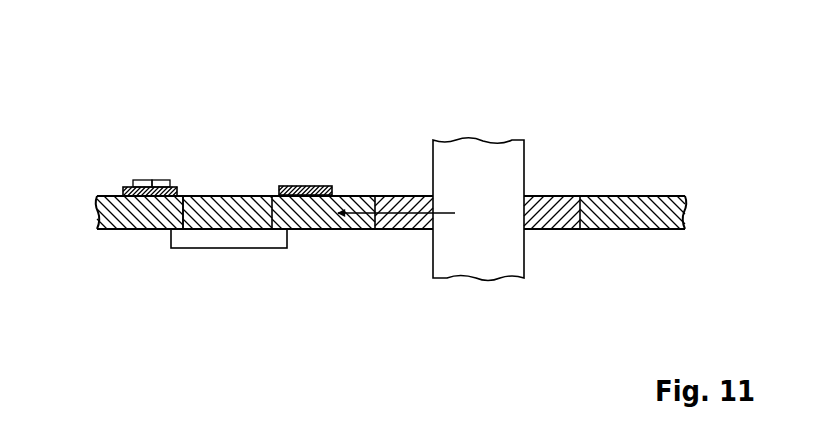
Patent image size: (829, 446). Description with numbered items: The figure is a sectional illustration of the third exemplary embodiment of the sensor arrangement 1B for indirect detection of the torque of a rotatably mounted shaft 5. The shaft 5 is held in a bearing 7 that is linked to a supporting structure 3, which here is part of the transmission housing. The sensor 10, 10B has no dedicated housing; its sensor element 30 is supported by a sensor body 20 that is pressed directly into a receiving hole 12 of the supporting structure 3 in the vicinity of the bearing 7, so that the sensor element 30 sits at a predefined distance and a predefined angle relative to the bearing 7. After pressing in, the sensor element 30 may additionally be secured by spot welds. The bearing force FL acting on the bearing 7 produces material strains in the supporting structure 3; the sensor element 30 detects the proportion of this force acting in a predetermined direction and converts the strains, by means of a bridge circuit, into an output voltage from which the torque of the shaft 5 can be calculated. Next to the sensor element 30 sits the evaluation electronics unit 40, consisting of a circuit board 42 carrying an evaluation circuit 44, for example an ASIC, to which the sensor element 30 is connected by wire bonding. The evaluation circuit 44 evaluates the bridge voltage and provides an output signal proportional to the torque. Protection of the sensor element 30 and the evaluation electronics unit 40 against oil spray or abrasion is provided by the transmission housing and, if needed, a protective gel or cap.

The sensor arrangement 1B is at (136, 100).
The evaluation electronics unit 40 is at (111, 161).
The circuit board 42 is at (145, 178).
The evaluation circuit 44 is at (156, 178).
The receiving hole 12 is at (186, 204).
The sensor element 30 is at (234, 195).
The sensor body 20 is at (226, 235).
The sensor 10 is at (391, 167).
The sensor 10B is at (391, 167).
The shaft 5 is at (478, 152).
The bearing 7 is at (553, 207).
The supporting structure 3 is at (628, 207).
The bearing force FL is at (357, 196).